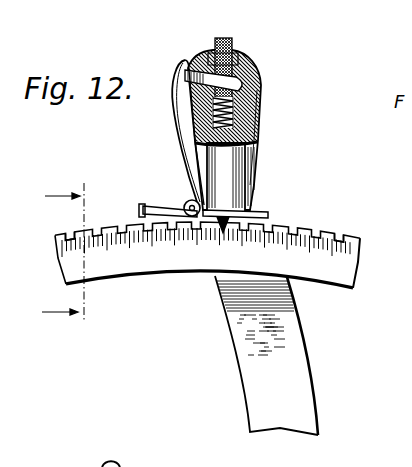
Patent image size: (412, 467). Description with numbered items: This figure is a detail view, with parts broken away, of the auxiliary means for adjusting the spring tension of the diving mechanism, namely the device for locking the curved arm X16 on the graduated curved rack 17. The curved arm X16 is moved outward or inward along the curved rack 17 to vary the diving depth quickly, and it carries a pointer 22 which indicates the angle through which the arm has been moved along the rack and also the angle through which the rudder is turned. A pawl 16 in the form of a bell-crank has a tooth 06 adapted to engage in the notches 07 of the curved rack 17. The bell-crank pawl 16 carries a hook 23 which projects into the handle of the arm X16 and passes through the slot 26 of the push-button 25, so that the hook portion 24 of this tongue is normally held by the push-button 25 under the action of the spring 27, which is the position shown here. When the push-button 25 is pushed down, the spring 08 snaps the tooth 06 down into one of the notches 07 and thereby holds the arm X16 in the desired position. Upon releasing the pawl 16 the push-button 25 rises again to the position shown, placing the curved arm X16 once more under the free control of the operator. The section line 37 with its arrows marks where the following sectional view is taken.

The hook 23 is at (201, 60).
The push-button 25 is at (233, 52).
The slot 26 is at (258, 72).
The hook portion 24 is at (240, 90).
The spring 27 is at (240, 110).
The pawl 16 is at (183, 140).
The spring 08 is at (195, 145).
The tooth 06 is at (143, 211).
The pointer 22 is at (250, 207).
The curved rack 17 is at (303, 235).
The notches 07 is at (73, 238).
The curved arm X16 is at (292, 365).
The section line 37 is at (74, 256).